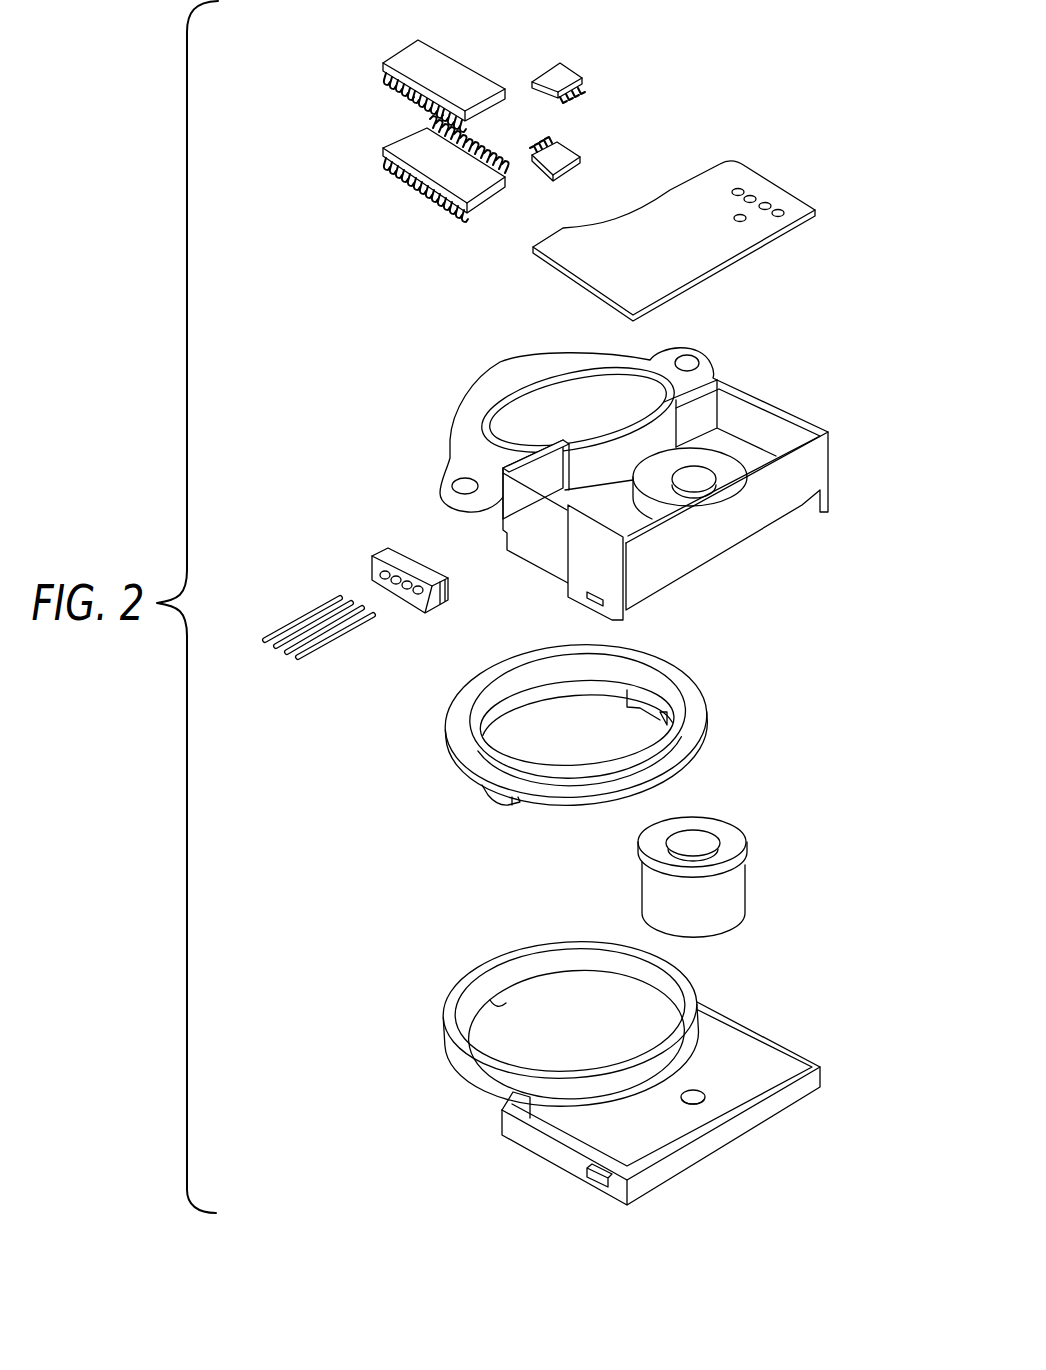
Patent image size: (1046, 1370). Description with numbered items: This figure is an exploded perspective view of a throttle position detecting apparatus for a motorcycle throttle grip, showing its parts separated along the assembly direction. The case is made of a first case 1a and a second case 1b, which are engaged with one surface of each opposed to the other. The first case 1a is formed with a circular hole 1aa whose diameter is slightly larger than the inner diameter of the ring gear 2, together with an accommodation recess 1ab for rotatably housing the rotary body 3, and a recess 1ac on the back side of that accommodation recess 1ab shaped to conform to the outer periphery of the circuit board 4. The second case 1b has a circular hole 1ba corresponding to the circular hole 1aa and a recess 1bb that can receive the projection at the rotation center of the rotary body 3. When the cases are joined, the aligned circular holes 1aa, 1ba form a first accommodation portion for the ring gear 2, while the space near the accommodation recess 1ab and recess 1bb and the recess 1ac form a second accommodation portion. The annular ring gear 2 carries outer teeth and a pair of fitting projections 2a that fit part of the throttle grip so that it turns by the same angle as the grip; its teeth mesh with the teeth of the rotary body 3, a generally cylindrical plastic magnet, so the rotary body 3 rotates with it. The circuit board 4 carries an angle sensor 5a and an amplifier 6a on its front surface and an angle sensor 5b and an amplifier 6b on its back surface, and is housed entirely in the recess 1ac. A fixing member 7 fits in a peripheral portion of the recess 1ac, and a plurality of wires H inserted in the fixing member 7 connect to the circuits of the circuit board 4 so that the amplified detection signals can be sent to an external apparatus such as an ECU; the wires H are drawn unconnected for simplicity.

The first case 1a is at (667, 463).
The circular hole 1aa is at (520, 395).
The accommodation recess 1ab is at (668, 500).
The recess 1ac is at (738, 407).
The second case 1b is at (619, 1051).
The circular hole 1ba is at (499, 1002).
The recess 1bb is at (694, 1102).
The ring gear 2 is at (605, 740).
The fitting projections 2a is at (640, 708).
The rotary body 3 is at (745, 835).
The circuit board 4 is at (750, 177).
The angle sensor 5a is at (566, 72).
The angle sensor 5b is at (566, 148).
The amplifier 6a is at (403, 63).
The amplifier 6b is at (415, 147).
The fixing member 7 is at (395, 547).
The wires H is at (300, 597).